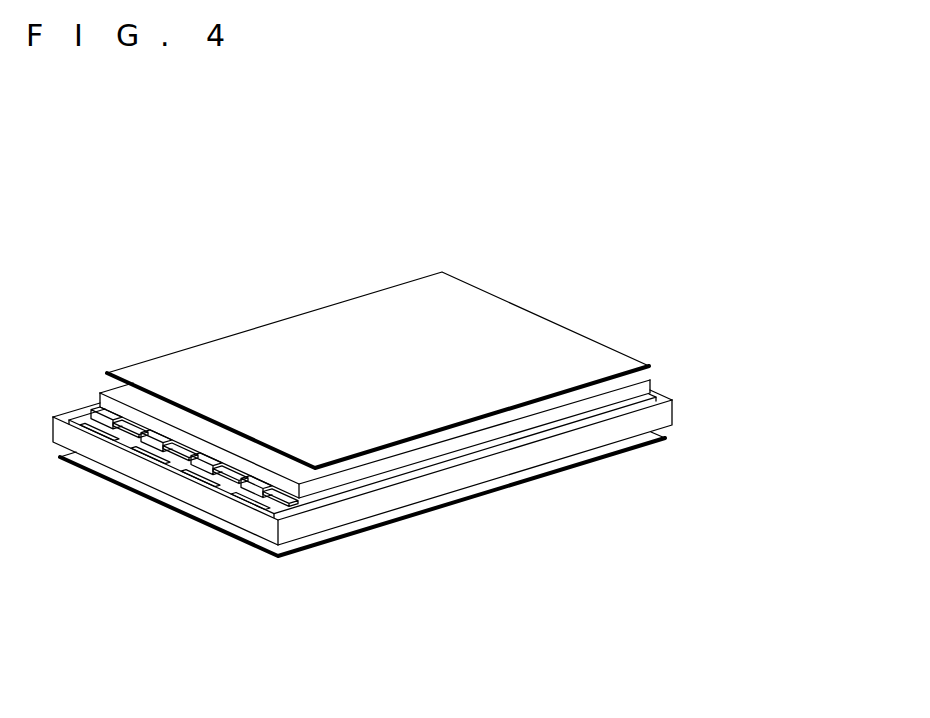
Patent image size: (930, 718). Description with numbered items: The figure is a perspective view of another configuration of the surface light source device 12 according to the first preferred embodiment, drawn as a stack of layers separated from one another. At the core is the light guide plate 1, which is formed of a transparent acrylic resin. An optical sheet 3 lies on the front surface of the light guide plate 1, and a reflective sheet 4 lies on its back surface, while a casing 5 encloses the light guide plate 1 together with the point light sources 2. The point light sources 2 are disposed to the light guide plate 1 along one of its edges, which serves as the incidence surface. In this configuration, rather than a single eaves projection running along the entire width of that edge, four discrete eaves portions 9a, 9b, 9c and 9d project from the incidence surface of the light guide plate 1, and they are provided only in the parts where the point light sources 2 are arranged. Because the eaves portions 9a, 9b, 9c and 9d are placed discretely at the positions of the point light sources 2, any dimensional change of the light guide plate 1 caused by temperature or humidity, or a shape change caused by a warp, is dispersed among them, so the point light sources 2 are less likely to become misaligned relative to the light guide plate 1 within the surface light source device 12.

The light guide plate 1 is at (560, 418).
The point light source 2 is at (92, 435).
The optical sheet 3 is at (328, 328).
The reflective sheet 4 is at (460, 498).
The casing 5 is at (517, 460).
The eaves portion 9a is at (121, 407).
The eaves portion 9b is at (172, 432).
The eaves portion 9c is at (225, 453).
The eaves portion 9d is at (275, 477).
The surface light source device 12 is at (683, 295).